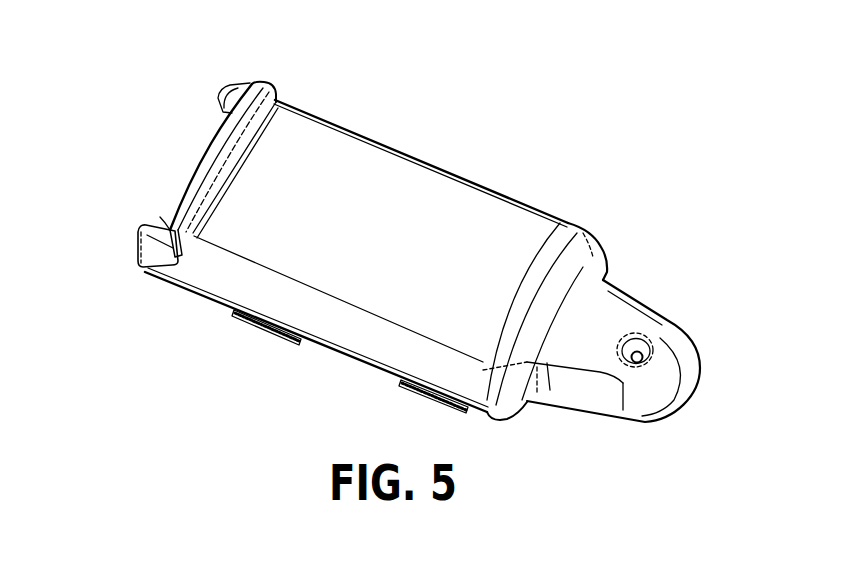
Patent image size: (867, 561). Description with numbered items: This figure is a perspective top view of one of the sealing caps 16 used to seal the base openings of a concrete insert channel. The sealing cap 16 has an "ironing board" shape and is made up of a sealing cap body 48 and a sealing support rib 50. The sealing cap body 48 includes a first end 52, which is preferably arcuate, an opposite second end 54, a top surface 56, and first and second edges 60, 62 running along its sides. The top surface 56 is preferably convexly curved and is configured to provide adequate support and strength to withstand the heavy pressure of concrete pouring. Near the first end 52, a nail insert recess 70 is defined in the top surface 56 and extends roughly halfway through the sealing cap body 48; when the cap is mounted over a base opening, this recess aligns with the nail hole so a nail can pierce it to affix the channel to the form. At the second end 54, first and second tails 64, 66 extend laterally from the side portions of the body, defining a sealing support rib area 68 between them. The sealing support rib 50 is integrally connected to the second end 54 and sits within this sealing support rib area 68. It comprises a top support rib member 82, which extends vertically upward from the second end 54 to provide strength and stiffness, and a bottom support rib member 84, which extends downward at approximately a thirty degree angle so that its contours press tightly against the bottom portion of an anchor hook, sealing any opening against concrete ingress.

The sealing cap 16 is at (408, 229).
The sealing cap body 48 is at (500, 230).
The sealing support rib 50 is at (196, 146).
The first end 52 is at (637, 352).
The second end 54 is at (280, 105).
The top surface 56 is at (382, 170).
The first edge 60 is at (500, 190).
The second edge 62 is at (333, 350).
The first tail 64 is at (237, 90).
The second tail 66 is at (157, 250).
The sealing support rib area 68 is at (160, 217).
The nail insert recess 70 is at (640, 353).
The top support rib member 82 is at (206, 177).
The bottom support rib member 84 is at (175, 207).